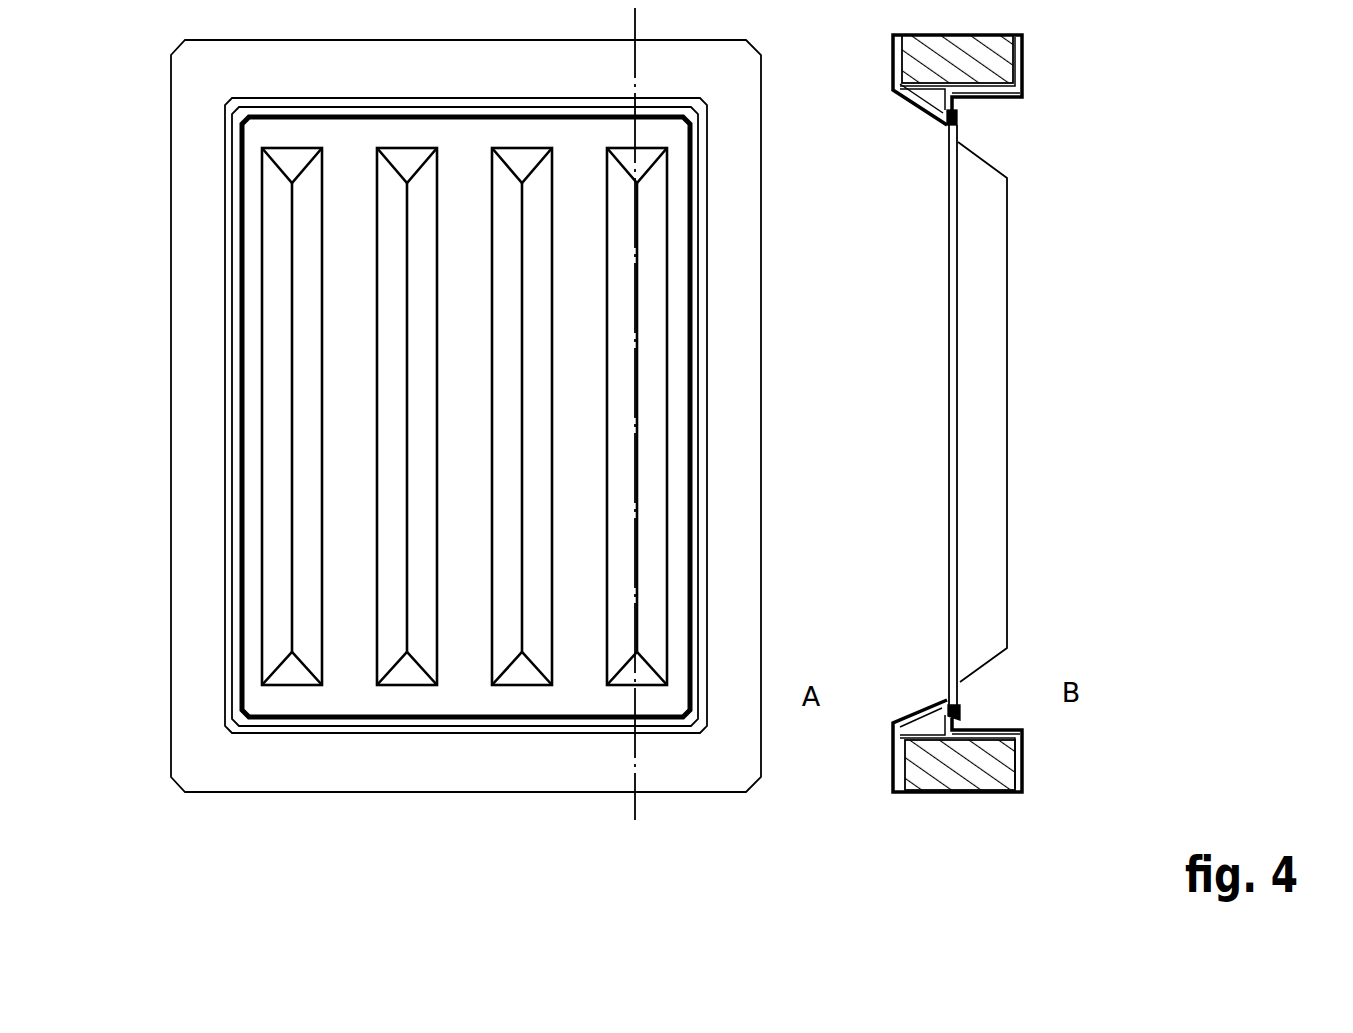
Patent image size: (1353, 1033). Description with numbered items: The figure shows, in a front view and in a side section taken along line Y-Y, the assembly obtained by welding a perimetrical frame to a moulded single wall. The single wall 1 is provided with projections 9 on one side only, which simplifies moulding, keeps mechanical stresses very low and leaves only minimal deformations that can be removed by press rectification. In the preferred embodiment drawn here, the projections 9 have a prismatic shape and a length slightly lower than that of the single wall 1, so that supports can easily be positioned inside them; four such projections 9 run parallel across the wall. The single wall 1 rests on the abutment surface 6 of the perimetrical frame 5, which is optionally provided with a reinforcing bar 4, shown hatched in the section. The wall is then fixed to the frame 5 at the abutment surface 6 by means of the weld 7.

In FIG. 4A, the single wall 1 is at (675, 260).
In FIG. 4B, the reinforcing bar 4 is at (993, 48).
In FIG. 4A, the perimetrical frame 5 is at (730, 172).
In FIG. 4B, the perimetrical frame 5 is at (1025, 66).
In FIG. 4A, the abutment surface 6 is at (702, 340).
In FIG. 4B, the abutment surface 6 is at (1022, 97).
In FIG. 4A, the weld 7 is at (692, 392).
In FIG. 4B, the weld 7 is at (957, 118).
In FIG. 4A, the projections 9 is at (650, 443).
In FIG. 4B, the projections 9 is at (977, 290).